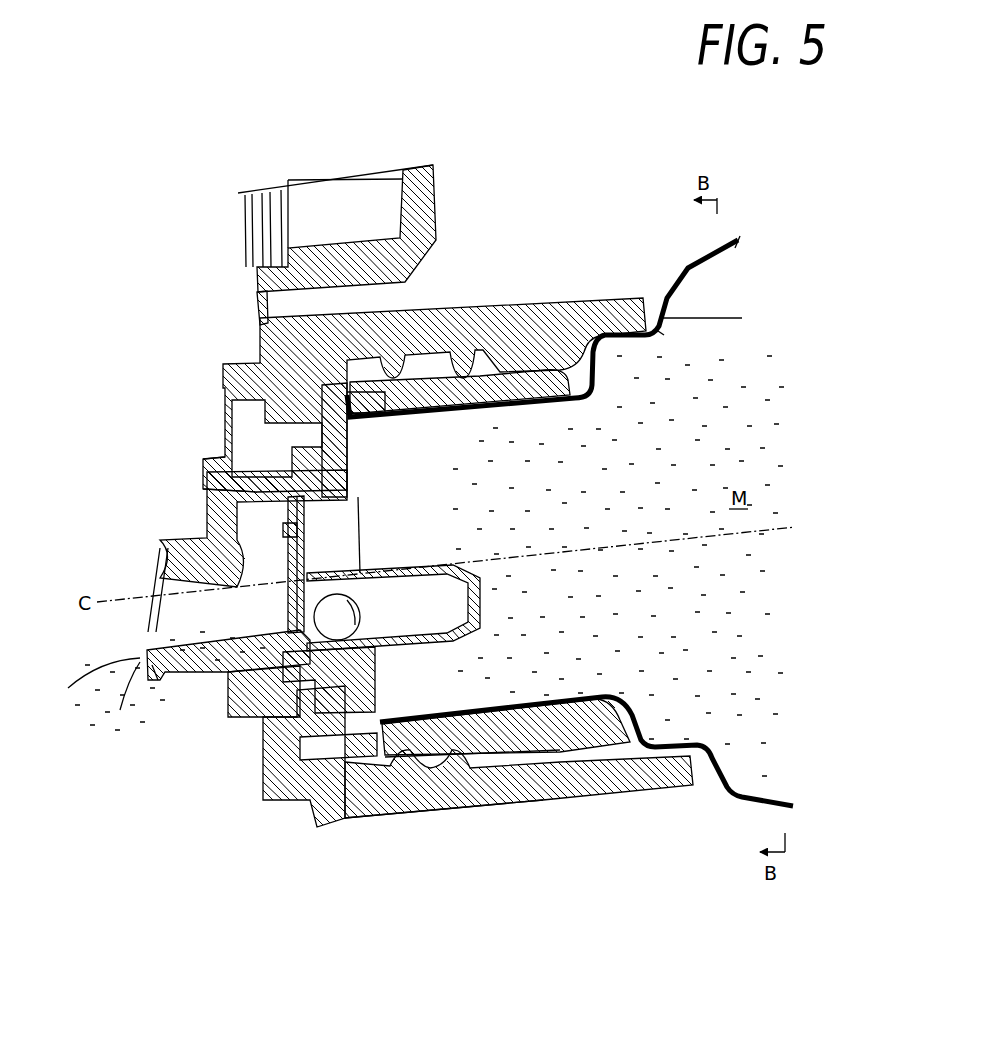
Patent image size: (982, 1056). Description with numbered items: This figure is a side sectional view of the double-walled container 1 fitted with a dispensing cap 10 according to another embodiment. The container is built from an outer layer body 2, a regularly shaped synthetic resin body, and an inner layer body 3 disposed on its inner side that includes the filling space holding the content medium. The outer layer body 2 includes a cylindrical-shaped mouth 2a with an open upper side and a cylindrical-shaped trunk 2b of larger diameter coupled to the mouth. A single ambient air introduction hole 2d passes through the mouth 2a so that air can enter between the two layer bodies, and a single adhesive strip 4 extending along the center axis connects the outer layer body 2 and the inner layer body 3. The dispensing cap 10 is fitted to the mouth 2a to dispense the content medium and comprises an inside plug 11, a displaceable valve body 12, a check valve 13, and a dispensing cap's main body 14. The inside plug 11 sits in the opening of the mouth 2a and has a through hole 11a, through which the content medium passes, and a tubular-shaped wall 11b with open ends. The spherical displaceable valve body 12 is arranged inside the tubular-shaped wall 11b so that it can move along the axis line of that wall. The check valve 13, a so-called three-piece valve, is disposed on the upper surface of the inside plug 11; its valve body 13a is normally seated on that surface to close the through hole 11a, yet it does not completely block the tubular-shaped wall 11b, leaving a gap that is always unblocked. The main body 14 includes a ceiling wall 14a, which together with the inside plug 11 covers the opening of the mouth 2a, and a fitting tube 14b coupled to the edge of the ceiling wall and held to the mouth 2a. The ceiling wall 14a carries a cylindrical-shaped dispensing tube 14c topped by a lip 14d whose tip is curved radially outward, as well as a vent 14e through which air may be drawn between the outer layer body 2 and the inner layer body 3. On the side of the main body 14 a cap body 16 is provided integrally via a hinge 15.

The double-walled container 1 is at (733, 806).
The outer layer body 2 is at (668, 272).
The mouth 2a is at (452, 385).
The trunk 2b is at (712, 268).
The ambient air introduction hole 2d is at (568, 722).
The inner layer body 3 is at (665, 337).
The adhesive strip 4 is at (490, 745).
The dispensing cap 10 is at (397, 830).
The inside plug 11 is at (360, 494).
The through hole 11a is at (308, 555).
The tubular-shaped wall 11b is at (455, 568).
The displaceable valve body 12 is at (355, 622).
The check valve 13 is at (225, 508).
The valve body 13a is at (280, 530).
The dispensing cap's main body 14 is at (545, 795).
The ceiling wall 14a is at (228, 700).
The fitting tube 14b is at (463, 800).
The dispensing tube 14c is at (187, 673).
The lip 14d is at (150, 682).
The vent 14e is at (228, 448).
The hinge 15 is at (258, 306).
The cap body 16 is at (440, 193).